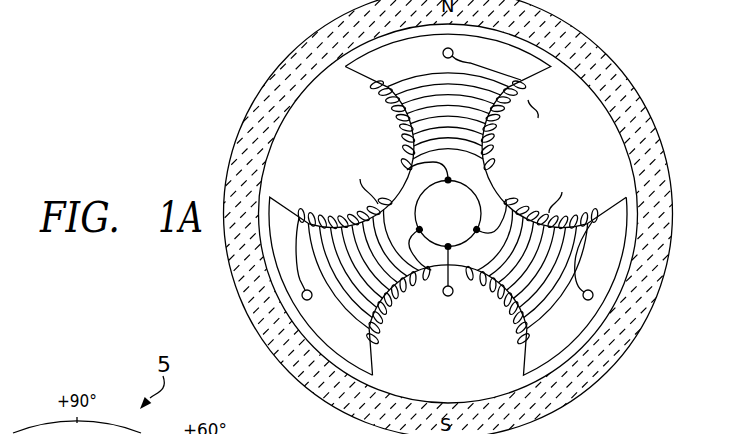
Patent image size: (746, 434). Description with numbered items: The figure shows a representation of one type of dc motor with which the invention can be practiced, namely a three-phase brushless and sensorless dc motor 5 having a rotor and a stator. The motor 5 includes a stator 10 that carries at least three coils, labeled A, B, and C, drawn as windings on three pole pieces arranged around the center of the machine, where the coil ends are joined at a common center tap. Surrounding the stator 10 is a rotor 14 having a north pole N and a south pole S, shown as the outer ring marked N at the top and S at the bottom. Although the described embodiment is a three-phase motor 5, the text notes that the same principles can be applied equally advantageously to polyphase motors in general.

The three-phase brushless and sensorless dc motor 5 is at (260, 50).
The stator 10 is at (365, 136).
The rotor 14 is at (632, 78).